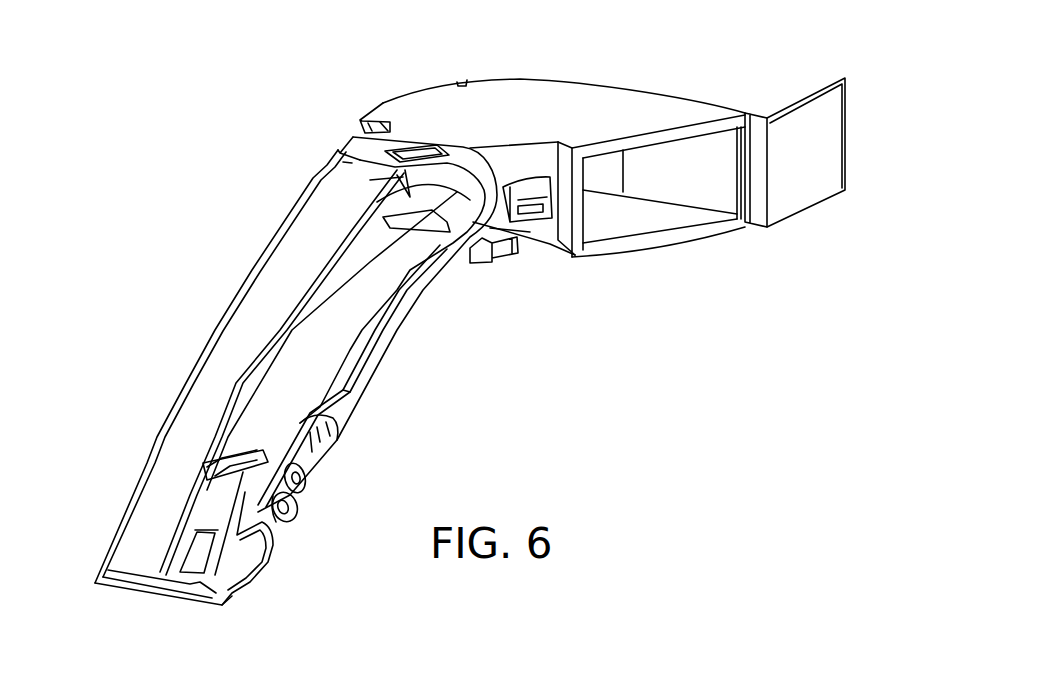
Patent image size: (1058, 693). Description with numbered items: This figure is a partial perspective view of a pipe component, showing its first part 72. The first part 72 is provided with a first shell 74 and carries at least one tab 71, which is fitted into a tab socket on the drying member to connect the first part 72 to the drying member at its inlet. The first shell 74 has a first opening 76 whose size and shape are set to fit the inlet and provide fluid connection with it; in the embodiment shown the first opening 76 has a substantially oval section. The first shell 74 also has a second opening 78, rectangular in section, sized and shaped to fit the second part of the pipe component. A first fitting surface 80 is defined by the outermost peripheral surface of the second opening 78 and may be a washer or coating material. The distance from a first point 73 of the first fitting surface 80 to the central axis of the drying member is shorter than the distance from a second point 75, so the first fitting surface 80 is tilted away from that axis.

The tab 71 is at (417, 148).
The first part 72 is at (546, 80).
The first point 73 is at (582, 157).
The first shell 74 is at (626, 105).
The second point 75 is at (748, 114).
The first opening 76 is at (440, 208).
The second opening 78 is at (620, 222).
The first fitting surface 80 is at (658, 249).